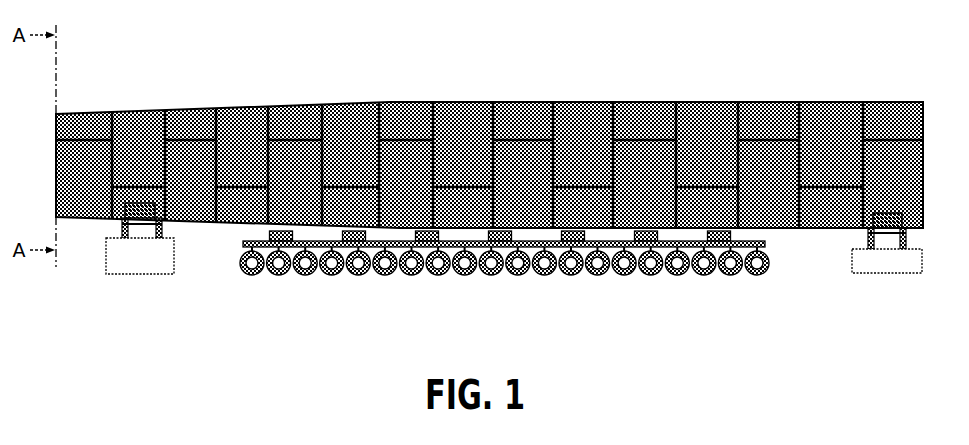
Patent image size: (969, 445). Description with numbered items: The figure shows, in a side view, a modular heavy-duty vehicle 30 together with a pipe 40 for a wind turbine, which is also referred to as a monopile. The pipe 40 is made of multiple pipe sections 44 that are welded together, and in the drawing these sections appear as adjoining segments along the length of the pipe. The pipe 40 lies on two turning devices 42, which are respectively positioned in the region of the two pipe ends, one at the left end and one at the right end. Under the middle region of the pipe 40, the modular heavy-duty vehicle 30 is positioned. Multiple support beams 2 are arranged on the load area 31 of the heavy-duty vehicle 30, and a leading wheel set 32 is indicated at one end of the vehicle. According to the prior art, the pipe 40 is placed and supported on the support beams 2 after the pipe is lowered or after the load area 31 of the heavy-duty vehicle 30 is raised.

The support beam 2 is at (499, 293).
The modular heavy-duty vehicle 30 is at (527, 284).
The load area 31 is at (766, 246).
The front wheel set of transport vehicle 32 is at (244, 272).
The pipe 40 is at (489, 127).
The turning device 42 is at (143, 254).
The pipe section 44 is at (522, 103).